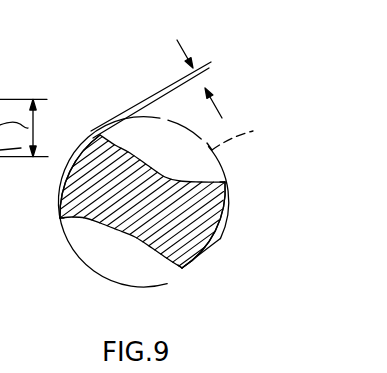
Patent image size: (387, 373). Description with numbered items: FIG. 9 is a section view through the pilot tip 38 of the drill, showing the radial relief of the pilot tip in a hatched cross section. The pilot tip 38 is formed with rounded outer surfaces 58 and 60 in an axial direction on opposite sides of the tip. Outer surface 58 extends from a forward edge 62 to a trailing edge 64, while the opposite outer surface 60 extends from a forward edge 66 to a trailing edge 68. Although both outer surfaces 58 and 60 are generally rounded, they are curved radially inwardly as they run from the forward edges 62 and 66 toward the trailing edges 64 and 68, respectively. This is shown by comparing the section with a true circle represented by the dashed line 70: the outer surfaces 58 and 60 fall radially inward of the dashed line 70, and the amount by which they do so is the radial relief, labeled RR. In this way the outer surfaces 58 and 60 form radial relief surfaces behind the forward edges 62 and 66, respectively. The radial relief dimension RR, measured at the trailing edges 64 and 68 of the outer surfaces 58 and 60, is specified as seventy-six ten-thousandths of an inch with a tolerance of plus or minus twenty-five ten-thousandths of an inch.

The pilot tip 38 is at (110, 230).
The outer surface 58 is at (206, 251).
The outer surface 60 is at (78, 153).
The forward edge 62 is at (227, 181).
The trailing edge 64 is at (182, 269).
The forward edge 66 is at (60, 220).
The trailing edge 68 is at (96, 136).
The dashed line 70 is at (245, 135).
The radial relief RR is at (208, 98).